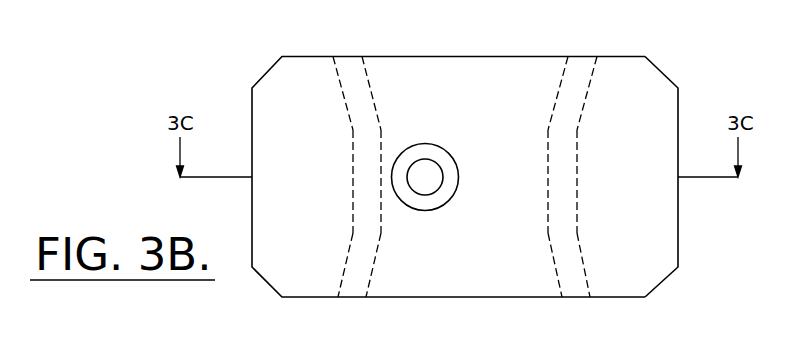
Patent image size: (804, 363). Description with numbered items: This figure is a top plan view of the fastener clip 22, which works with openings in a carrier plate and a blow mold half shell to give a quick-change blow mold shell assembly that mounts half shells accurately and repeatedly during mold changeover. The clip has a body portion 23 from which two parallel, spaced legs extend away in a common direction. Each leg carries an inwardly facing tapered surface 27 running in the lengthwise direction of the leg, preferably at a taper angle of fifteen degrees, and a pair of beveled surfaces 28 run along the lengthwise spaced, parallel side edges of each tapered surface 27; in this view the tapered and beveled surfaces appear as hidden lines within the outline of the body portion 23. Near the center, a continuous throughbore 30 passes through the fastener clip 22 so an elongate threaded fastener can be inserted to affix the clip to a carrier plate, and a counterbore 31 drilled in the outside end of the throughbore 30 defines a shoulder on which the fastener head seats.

The fastener clip 22 is at (488, 156).
The body portion 23 is at (678, 177).
The tapered surface 27 is at (465, 185).
The beveled surfaces 28 is at (465, 184).
The throughbore 30 is at (448, 151).
The counterbore 31 is at (454, 170).